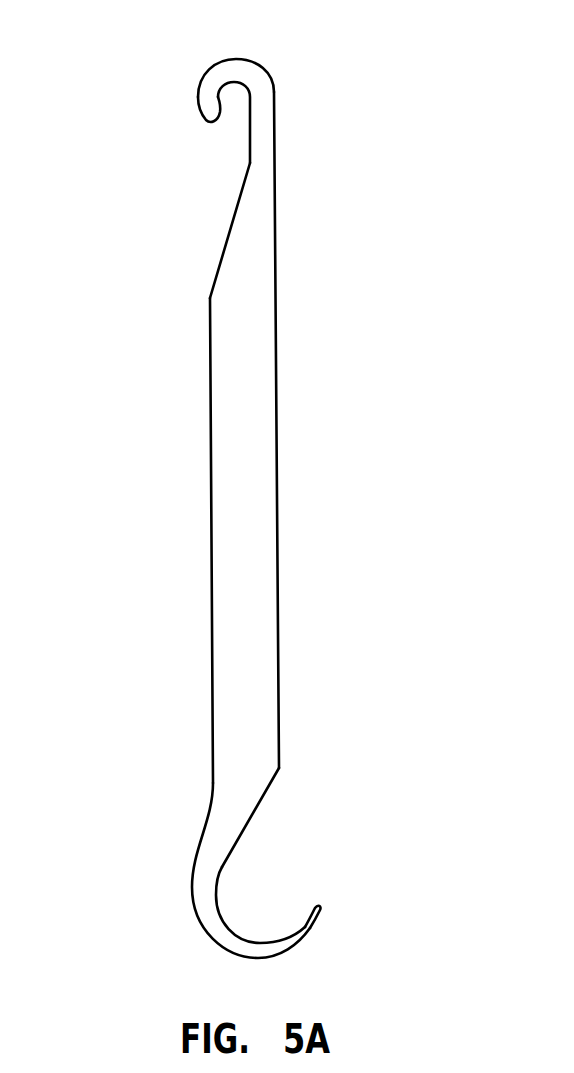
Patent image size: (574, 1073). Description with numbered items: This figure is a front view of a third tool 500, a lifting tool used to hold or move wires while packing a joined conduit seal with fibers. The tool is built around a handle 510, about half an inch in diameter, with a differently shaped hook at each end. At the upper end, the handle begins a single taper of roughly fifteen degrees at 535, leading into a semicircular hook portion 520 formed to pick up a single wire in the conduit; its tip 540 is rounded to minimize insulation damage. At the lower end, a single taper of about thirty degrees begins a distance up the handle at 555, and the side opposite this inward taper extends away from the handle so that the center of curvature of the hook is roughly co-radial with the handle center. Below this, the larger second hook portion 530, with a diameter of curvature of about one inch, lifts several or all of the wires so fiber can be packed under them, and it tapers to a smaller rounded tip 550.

The third tool 500 is at (122, 89).
The handle 510 is at (278, 430).
The hook portion 520 is at (252, 62).
The second hook portion 530 is at (214, 944).
The taper 535 is at (210, 298).
The tip 540 is at (208, 120).
The rounded tip 550 is at (320, 911).
The taper 555 is at (280, 768).